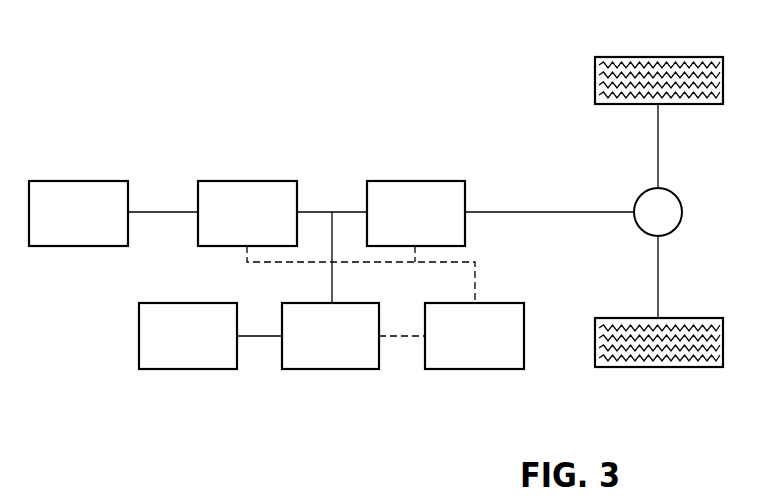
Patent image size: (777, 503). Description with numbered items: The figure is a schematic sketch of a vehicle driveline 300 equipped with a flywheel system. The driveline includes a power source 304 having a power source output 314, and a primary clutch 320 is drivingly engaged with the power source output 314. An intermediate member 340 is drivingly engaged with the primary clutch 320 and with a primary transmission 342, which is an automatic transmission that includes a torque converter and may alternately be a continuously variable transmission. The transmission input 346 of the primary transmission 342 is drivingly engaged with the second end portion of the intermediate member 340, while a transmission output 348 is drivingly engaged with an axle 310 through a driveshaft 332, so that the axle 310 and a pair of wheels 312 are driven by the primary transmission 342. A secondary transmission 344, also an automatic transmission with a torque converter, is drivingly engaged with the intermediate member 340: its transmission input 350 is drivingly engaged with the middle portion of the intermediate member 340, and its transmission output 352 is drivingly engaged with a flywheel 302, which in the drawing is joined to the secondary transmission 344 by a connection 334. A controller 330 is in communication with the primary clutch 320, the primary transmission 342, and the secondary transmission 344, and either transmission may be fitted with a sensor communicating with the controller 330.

The vehicle driveline 300 is at (216, 74).
The flywheel 302 is at (187, 369).
The power source 304 is at (78, 181).
The axle 310 is at (658, 277).
The wheels 312 is at (657, 57).
The power source output 314 is at (163, 212).
The primary clutch 320 is at (246, 181).
The controller 330 is at (475, 369).
The driveshaft 332 is at (578, 212).
The signal line 334 is at (259, 340).
The intermediate member 340 is at (311, 212).
The primary transmission 342 is at (416, 181).
The secondary transmission 344 is at (331, 369).
The transmission input 346 is at (367, 205).
The transmission output 348 is at (465, 208).
The transmission input 350 is at (331, 300).
The transmission output 352 is at (282, 330).